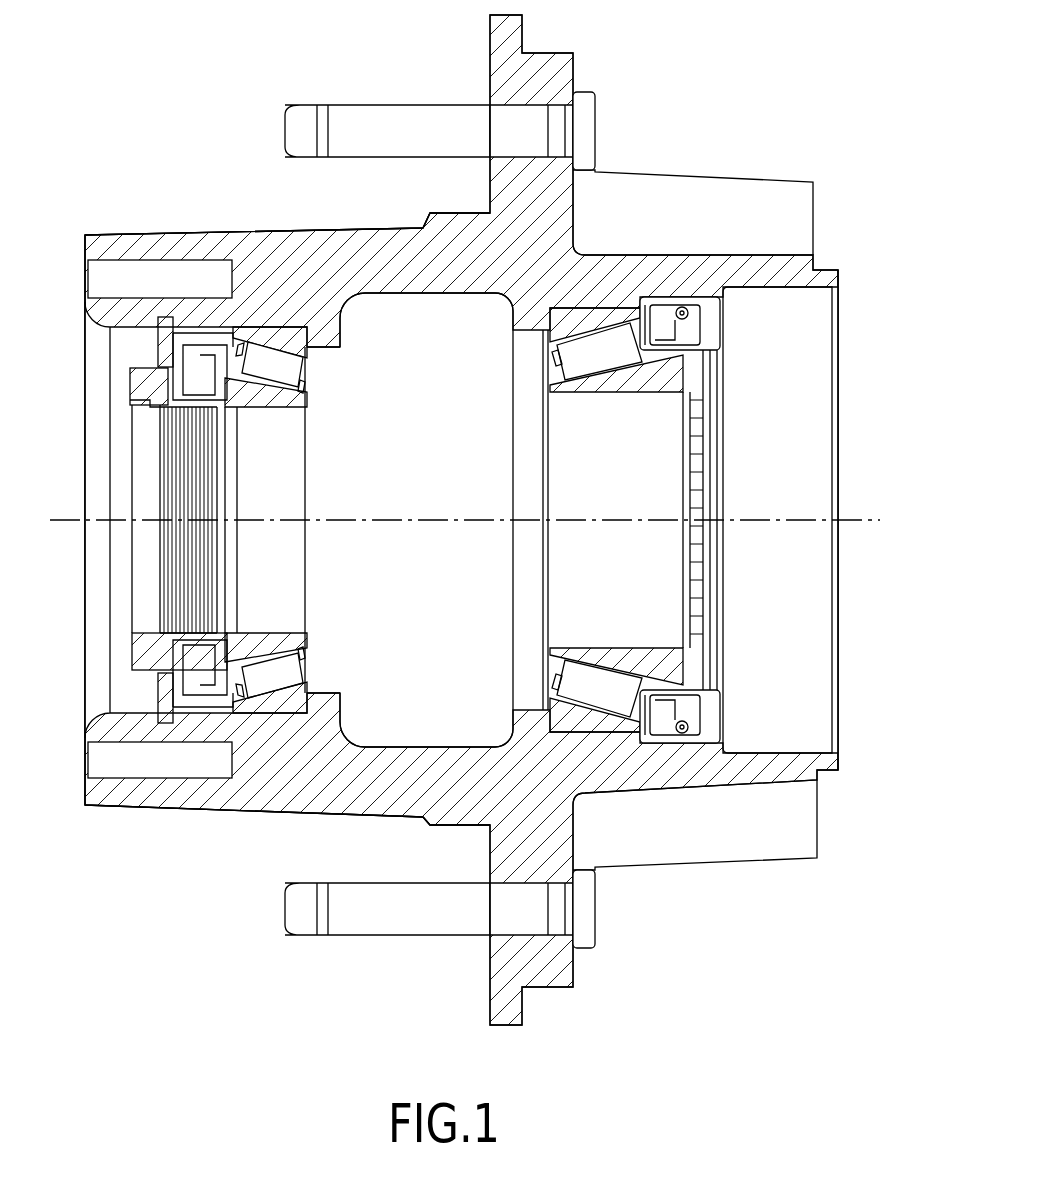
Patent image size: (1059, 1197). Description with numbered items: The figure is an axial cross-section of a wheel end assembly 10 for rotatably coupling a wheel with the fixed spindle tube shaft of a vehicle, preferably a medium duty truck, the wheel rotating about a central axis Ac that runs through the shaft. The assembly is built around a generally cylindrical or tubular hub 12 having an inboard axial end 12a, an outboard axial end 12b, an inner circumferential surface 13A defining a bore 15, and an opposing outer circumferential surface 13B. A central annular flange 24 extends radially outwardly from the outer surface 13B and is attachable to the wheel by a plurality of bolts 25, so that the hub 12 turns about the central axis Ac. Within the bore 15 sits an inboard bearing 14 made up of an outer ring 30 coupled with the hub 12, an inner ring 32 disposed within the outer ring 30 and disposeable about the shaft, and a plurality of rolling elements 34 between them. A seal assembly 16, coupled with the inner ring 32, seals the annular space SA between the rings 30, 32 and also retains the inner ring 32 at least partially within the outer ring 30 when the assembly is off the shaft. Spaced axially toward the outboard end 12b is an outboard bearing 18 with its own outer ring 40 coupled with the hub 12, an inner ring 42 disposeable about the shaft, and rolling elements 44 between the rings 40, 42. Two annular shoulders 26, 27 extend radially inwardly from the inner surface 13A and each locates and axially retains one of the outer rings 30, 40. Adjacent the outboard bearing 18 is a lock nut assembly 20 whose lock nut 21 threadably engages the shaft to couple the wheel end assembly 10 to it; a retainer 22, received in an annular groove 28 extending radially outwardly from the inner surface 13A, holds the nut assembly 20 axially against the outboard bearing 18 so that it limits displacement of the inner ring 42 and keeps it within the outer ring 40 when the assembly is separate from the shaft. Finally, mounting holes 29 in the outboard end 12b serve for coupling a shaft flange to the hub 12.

The wheel end assembly 10 is at (84, 162).
The hub 12 is at (130, 836).
The inboard axial end 12a is at (838, 280).
The outboard axial end 12b is at (90, 243).
The inner circumferential surface 13A is at (423, 293).
The outer circumferential surface 13B is at (176, 232).
The inboard bearing 14 is at (582, 571).
The bore 15 is at (804, 454).
The seal assembly 16 is at (754, 323).
The outboard bearing 18 is at (319, 529).
The lock nut assembly 20 is at (112, 648).
The lock nut 21 is at (132, 396).
The retainer 22 is at (118, 349).
The central annular flange 24 is at (572, 68).
The bolts 25 is at (387, 118).
The annular shoulder 26 is at (524, 485).
The annular shoulder 27 is at (330, 342).
The annular groove 28 is at (190, 318).
The mounting holes 29 is at (118, 262).
The outer ring 30 is at (603, 718).
The inner ring 32 is at (623, 657).
The rolling elements 34 is at (600, 355).
The outer ring 40 is at (278, 700).
The inner ring 42 is at (275, 645).
The rolling elements 44 is at (282, 673).
The annular space SA is at (586, 688).
The central axis Ac is at (860, 518).